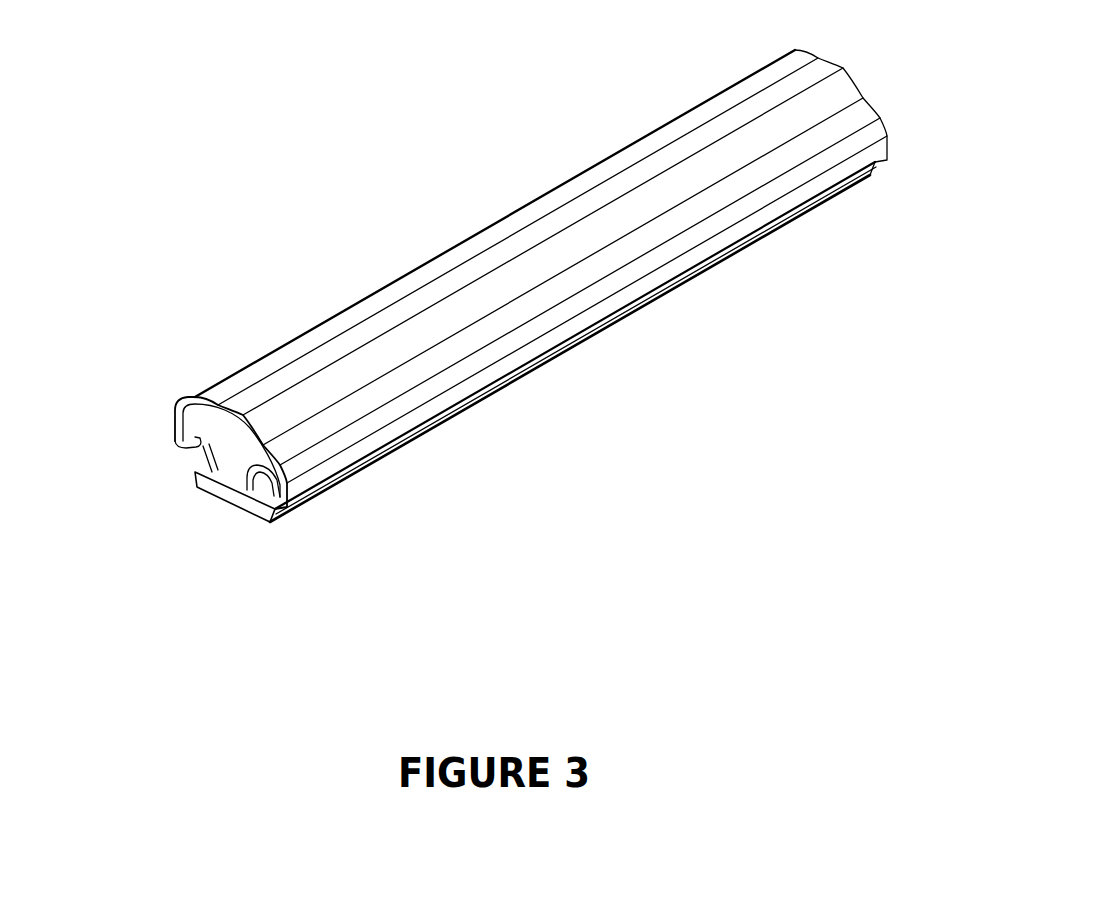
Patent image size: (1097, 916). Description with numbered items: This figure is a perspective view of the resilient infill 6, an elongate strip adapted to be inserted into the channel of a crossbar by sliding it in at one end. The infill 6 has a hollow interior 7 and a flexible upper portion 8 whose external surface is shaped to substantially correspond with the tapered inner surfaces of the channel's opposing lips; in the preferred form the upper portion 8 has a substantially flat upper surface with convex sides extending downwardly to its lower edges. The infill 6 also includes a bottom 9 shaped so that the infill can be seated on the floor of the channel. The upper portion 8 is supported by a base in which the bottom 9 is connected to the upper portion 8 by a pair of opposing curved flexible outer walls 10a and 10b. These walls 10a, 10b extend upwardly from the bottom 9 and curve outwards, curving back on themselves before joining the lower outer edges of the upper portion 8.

The resilient infill 6 is at (427, 197).
The hollow interior 7 is at (243, 436).
The flexible upper portion 8 is at (398, 324).
The bottom 9 is at (231, 501).
The curved flexible outer wall 10a is at (205, 451).
The curved flexible outer wall 10b is at (258, 478).